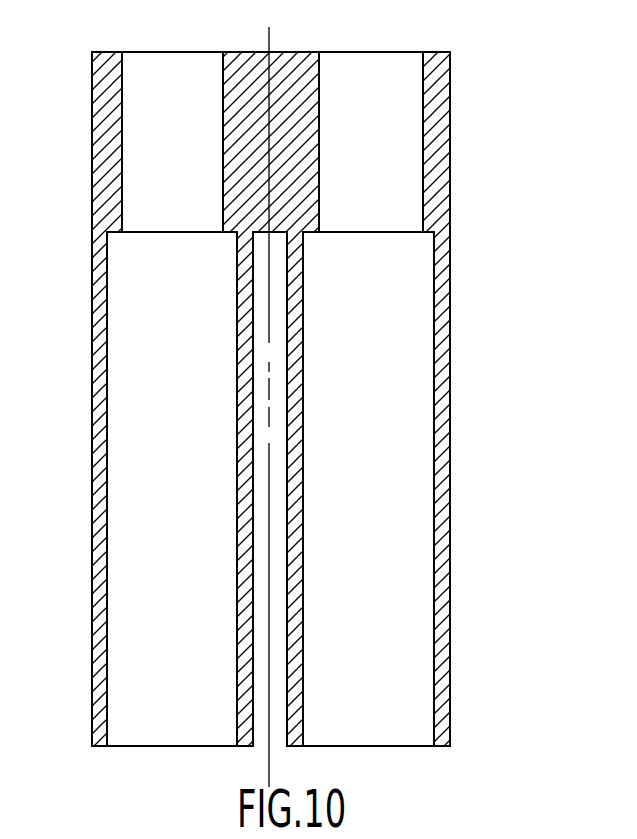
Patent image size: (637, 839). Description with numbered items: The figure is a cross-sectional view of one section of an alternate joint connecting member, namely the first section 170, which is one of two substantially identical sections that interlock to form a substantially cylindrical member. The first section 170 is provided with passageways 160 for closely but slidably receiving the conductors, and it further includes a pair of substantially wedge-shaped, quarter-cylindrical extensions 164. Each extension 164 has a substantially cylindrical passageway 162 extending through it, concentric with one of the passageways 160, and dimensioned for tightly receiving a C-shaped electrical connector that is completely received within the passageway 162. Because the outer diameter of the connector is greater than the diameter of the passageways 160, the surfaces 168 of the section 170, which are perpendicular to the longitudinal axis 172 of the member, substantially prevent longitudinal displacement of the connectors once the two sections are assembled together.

The passageway 160 is at (137, 149).
The cylindrical passageway 162 is at (150, 440).
The wedge-shaped extension 164 is at (450, 553).
The surface 168 is at (425, 234).
The first section 170 is at (490, 181).
The longitudinal axis 172 is at (271, 34).